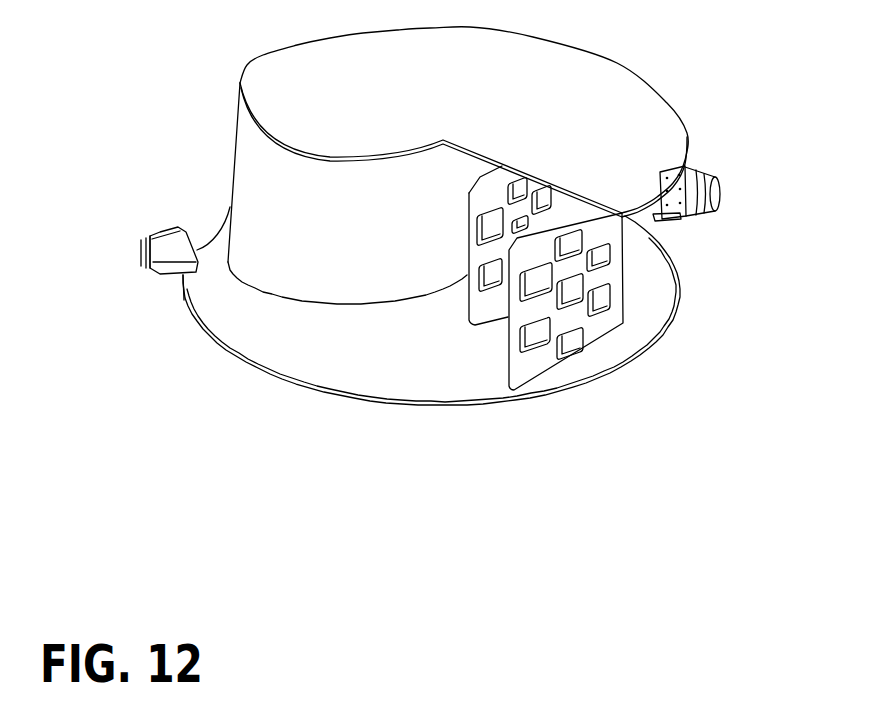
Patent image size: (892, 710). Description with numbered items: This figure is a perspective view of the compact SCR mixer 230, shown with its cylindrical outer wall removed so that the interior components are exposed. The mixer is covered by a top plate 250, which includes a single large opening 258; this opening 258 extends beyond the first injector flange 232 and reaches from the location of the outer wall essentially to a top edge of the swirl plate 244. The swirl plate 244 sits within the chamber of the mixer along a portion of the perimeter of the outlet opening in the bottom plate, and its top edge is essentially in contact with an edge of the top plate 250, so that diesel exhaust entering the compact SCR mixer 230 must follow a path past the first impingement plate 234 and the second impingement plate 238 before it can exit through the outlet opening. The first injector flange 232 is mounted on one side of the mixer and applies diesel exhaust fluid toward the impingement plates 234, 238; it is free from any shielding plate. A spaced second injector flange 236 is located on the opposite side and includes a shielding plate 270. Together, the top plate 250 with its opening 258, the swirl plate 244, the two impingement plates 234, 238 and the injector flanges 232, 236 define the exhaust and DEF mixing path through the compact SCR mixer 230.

The compact SCR mixer 230 is at (532, 468).
The first injector flange 232 is at (177, 255).
The first impingement plate 234 is at (600, 332).
The second injector flange 236 is at (713, 193).
The second impingement plate 238 is at (487, 307).
The swirl plate 244 is at (360, 278).
The top plate 250 is at (486, 101).
The opening 258 is at (423, 380).
The shielding plate 270 is at (672, 214).